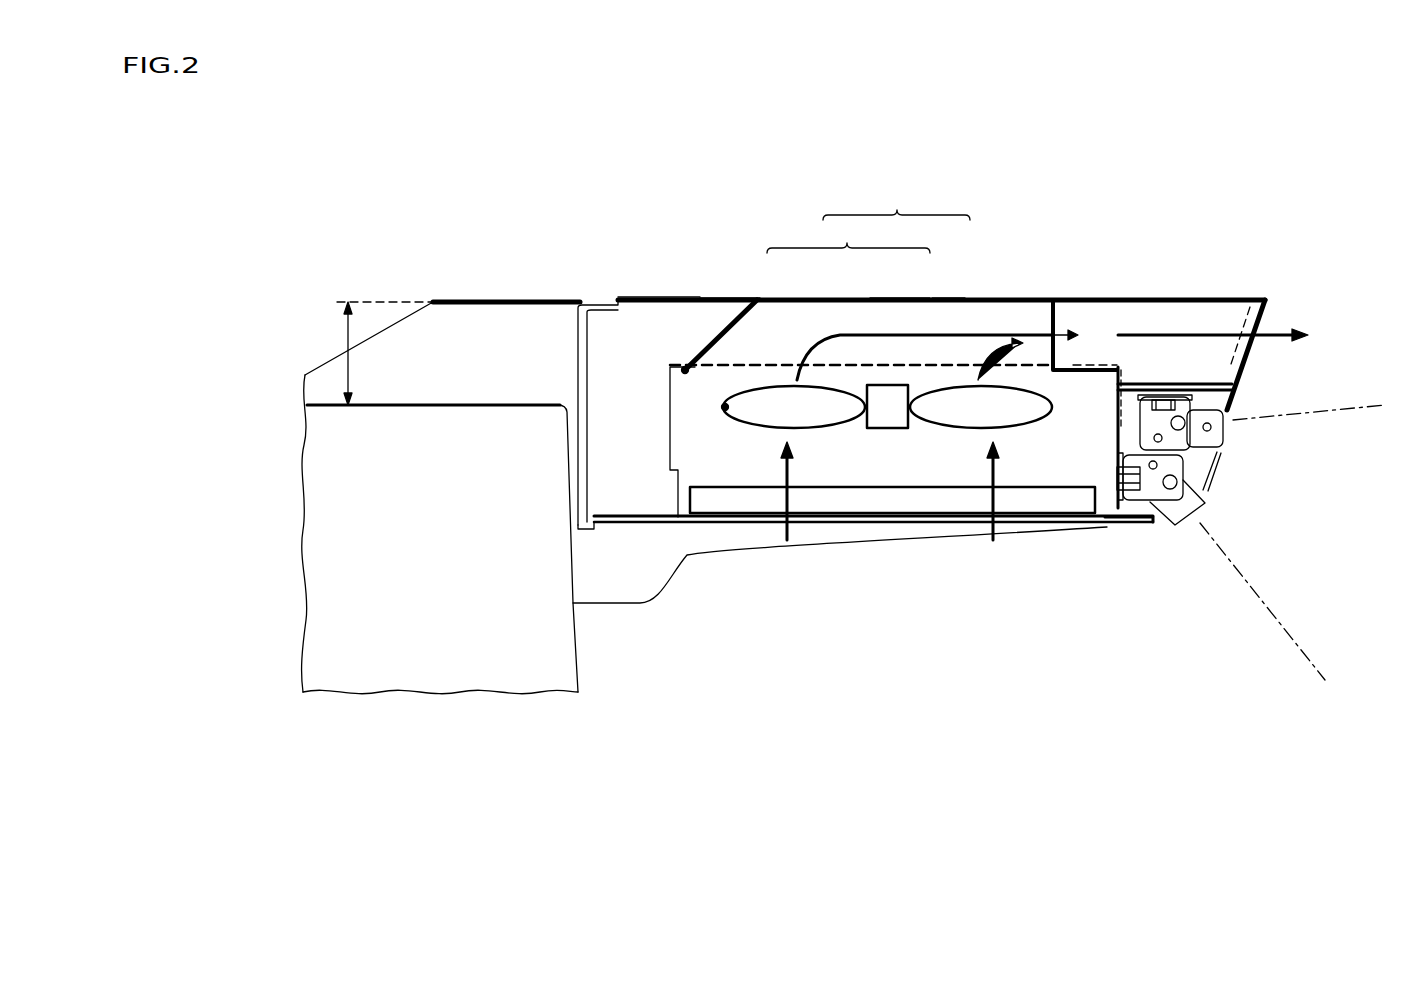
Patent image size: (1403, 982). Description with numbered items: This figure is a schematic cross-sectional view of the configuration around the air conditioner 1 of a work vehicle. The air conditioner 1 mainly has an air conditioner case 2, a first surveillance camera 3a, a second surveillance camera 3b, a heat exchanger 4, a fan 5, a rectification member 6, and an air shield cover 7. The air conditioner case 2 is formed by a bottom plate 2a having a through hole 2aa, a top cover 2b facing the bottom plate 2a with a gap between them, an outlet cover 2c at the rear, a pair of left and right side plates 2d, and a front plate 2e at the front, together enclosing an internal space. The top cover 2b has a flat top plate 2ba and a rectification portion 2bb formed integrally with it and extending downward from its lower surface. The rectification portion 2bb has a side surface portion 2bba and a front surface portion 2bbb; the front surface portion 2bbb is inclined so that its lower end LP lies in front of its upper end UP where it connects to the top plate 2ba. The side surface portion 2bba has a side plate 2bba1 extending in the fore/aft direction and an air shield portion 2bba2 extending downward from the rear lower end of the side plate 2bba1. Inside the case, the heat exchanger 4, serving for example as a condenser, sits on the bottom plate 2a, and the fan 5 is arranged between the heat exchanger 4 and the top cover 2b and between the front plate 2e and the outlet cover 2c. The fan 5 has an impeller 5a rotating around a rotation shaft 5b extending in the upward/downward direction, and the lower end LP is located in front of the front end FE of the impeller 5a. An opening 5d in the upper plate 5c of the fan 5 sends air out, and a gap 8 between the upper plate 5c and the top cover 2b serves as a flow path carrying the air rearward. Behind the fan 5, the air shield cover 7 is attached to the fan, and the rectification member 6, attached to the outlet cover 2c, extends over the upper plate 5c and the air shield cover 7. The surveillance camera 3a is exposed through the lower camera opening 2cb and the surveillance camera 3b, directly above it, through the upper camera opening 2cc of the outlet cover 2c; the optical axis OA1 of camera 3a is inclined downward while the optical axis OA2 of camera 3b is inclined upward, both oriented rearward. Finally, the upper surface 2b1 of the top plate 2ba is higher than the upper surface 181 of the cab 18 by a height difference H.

The air conditioner 1 is at (1267, 257).
The air conditioner case 2 is at (988, 300).
The bottom plate 2a is at (737, 520).
The through hole 2aa is at (860, 523).
The top cover 2b is at (896, 203).
The upper surface 2b1 is at (641, 297).
The top plate 2ba is at (940, 298).
The rectification portion 2bb is at (848, 235).
The side surface portion 2bba is at (902, 322).
The side plate 2bba1 is at (1075, 368).
The air shield portion 2bba2 is at (1110, 515).
The front surface portion 2bbb is at (735, 325).
The outlet cover 2c is at (1245, 345).
The camera opening 2cb is at (1203, 492).
The camera opening 2cc is at (1220, 450).
The side plate 2d is at (613, 575).
The front plate 2e is at (577, 347).
The surveillance camera 3a is at (1180, 510).
The surveillance camera 3b is at (1197, 413).
The heat exchanger 4 is at (897, 497).
The fan 5 is at (773, 431).
The impeller 5a is at (820, 413).
The rotation shaft 5b is at (895, 408).
The upper plate 5c is at (725, 407).
The opening 5d is at (970, 373).
The rectification member 6 is at (1117, 325).
The air shield cover 7 is at (1197, 383).
The gap 8 is at (1018, 325).
The cab 18 is at (517, 427).
The upper surface 181 is at (452, 405).
The height difference H is at (348, 338).
The lower end LP is at (685, 366).
The upper end UP is at (757, 300).
The front end FE is at (707, 370).
The optical axis OA1 is at (1277, 627).
The optical axis OA2 is at (1320, 418).